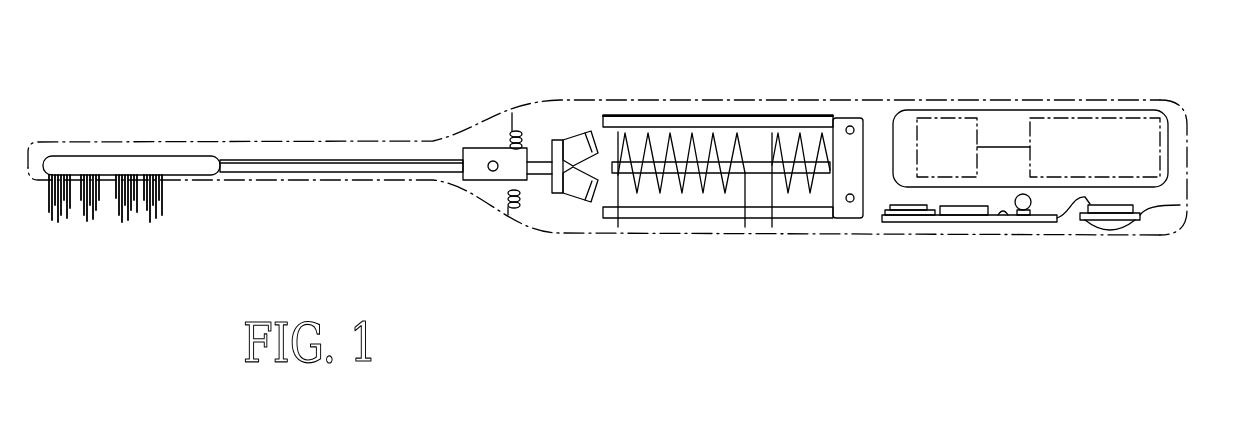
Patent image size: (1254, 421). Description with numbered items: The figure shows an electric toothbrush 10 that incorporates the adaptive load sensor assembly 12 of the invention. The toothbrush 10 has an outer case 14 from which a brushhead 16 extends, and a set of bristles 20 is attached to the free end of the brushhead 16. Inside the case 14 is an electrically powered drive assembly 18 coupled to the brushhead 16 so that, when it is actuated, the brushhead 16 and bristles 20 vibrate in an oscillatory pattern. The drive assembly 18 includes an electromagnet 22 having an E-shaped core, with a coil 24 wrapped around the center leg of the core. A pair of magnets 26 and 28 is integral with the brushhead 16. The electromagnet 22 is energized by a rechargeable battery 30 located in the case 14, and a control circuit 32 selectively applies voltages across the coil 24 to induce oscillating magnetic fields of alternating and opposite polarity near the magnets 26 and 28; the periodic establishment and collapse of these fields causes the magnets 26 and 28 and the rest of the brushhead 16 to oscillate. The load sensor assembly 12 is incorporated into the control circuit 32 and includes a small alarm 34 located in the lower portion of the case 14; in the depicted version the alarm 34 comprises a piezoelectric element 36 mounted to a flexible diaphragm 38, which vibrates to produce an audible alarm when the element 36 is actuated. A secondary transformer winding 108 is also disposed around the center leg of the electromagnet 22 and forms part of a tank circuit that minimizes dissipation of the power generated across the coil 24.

The electric toothbrush 10 is at (669, 74).
The adaptive load sensor assembly 12 is at (1010, 212).
The outer case 14 is at (805, 100).
The brushhead 16 is at (198, 168).
The drive assembly 18 is at (861, 118).
The bristles 20 is at (62, 215).
The electromagnet 22 is at (603, 215).
The coil 24 is at (690, 190).
The magnet 26 is at (588, 130).
The magnet 28 is at (580, 201).
The rechargeable battery 30 is at (1107, 156).
The control circuit 32 is at (952, 213).
The alarm 34 is at (1180, 215).
The piezoelectric element 36 is at (1143, 220).
The flexible diaphragm 38 is at (1105, 220).
The secondary transformer winding 108 is at (787, 190).